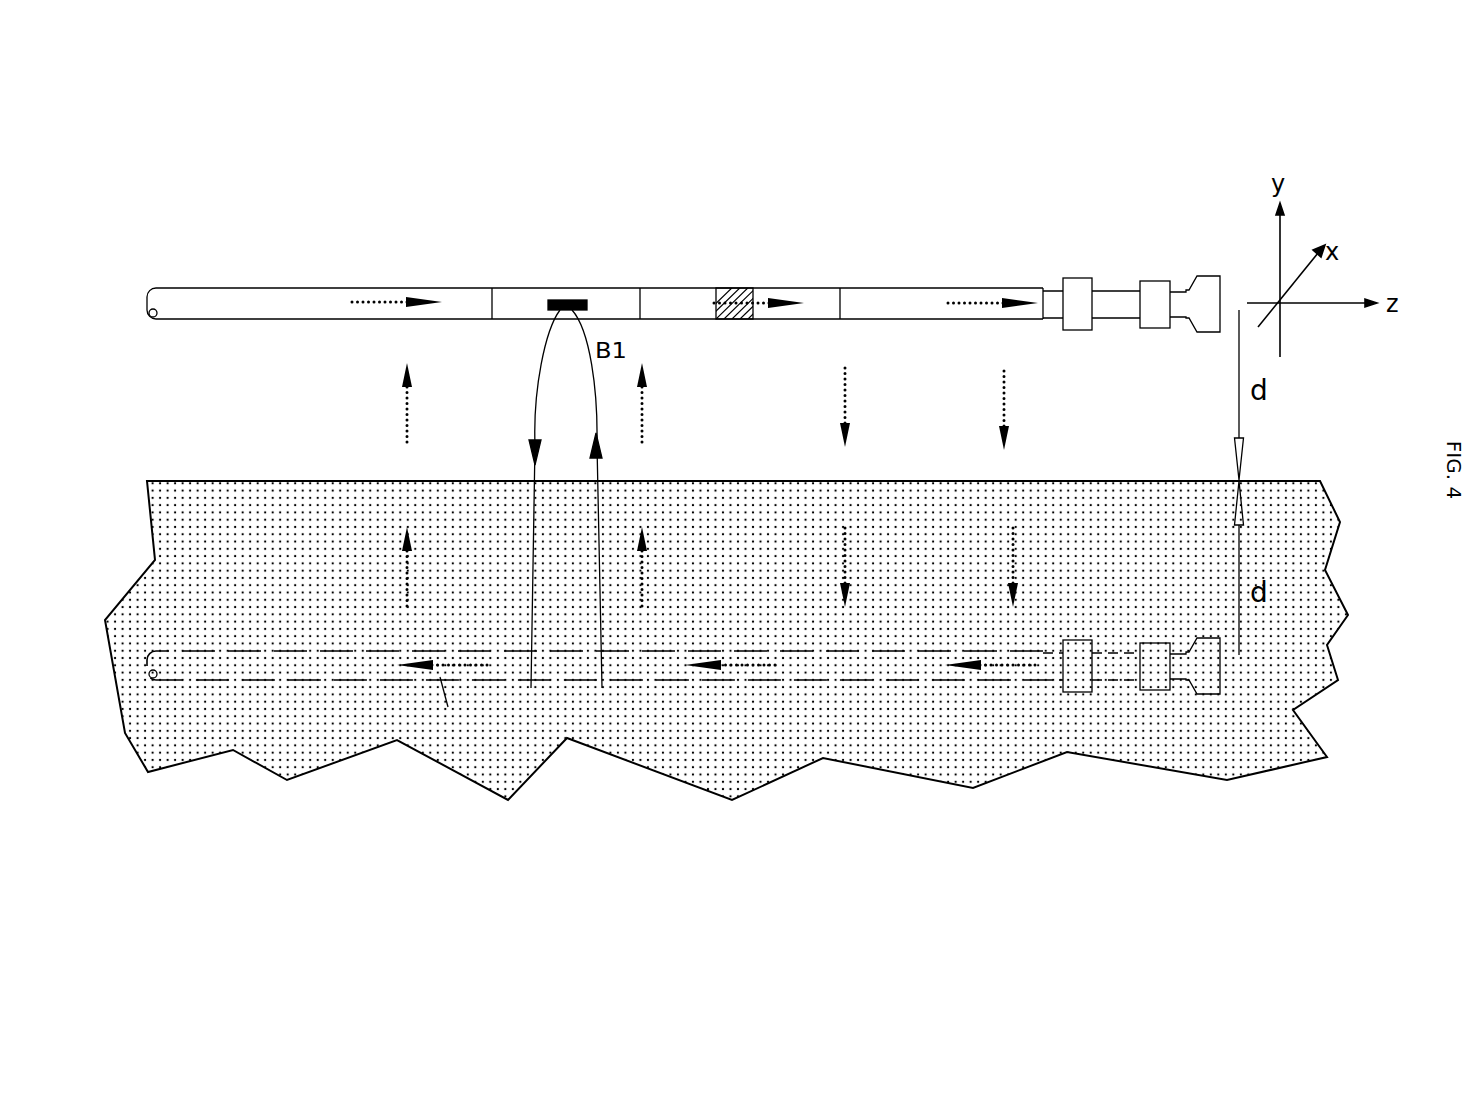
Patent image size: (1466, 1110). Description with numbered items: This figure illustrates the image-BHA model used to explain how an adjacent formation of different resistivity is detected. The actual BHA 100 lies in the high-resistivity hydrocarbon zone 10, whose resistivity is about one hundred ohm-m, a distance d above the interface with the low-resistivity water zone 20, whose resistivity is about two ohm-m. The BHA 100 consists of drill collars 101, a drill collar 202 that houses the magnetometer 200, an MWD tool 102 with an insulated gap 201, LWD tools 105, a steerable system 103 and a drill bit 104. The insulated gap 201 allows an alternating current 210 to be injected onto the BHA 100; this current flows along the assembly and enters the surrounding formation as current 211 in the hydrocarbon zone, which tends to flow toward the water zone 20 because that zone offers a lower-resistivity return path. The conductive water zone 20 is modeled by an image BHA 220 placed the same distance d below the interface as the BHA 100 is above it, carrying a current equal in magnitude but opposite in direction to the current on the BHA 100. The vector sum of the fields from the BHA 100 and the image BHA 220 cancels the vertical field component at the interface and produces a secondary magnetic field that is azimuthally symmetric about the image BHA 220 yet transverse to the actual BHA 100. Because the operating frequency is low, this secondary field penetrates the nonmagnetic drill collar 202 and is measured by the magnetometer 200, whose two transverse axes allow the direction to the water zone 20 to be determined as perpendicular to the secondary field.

The hydrocarbon zone 10 is at (670, 118).
The water zone 20 is at (1218, 577).
The BHA 100 is at (842, 194).
The drill collars 101 is at (282, 305).
The MWD tool 102 is at (703, 287).
The steerable system 103 is at (1118, 303).
The drill bit 104 is at (1217, 285).
The LWD tools 105 is at (910, 303).
The magnetometer 200 is at (567, 300).
The insulated gap 201 is at (742, 298).
The nonmagnetic drill collar 202 is at (515, 297).
The current on BHA 210 is at (372, 297).
The current in hydrocarbon zone 211 is at (1015, 400).
The image BHA 220 is at (822, 680).